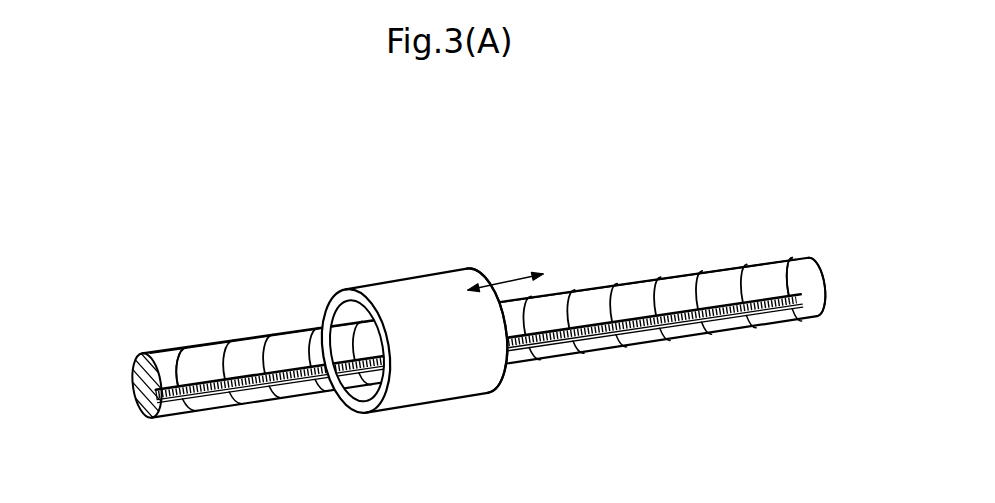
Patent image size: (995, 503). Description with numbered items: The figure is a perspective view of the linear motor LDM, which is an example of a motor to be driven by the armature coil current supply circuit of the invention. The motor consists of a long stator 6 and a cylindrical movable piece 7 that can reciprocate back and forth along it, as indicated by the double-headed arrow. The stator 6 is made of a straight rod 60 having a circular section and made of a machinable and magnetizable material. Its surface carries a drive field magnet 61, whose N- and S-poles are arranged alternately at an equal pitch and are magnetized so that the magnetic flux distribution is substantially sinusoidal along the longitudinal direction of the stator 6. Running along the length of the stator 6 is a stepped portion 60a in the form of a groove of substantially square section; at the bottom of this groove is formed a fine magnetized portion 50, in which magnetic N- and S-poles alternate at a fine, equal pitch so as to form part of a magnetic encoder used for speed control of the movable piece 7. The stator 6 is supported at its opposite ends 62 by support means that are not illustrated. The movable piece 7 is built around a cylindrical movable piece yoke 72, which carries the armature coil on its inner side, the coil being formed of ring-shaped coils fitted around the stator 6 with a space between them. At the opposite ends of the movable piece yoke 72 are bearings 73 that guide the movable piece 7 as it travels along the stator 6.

The stator 6 is at (284, 319).
The movable piece 7 is at (408, 262).
The fine magnetized portion 50 is at (255, 383).
The straight rod 60 is at (132, 398).
The stepped portion 60a is at (198, 394).
The drive field magnet 61 is at (250, 338).
The opposite ends 62 is at (170, 363).
The movable piece yoke 72 is at (451, 282).
The bearings 73 is at (347, 318).
The linear motor LDM is at (200, 248).